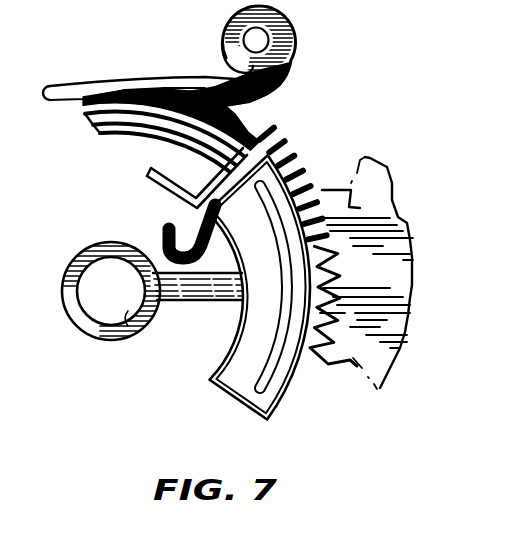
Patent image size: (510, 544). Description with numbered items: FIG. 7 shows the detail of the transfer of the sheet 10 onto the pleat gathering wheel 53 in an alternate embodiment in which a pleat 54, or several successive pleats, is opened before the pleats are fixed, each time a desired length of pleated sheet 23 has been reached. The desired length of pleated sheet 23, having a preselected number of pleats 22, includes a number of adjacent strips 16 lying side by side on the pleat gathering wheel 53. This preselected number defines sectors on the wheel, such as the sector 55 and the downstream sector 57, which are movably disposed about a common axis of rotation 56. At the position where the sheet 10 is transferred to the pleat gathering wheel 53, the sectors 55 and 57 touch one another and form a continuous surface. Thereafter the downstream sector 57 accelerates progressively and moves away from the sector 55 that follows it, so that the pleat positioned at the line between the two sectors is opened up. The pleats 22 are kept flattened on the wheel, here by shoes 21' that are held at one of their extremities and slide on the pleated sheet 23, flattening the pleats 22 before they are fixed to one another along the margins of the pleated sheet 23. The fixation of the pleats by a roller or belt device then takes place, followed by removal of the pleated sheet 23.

The sheet 10 is at (343, 351).
The adjacent strips 16 is at (320, 178).
The shoes 21' is at (261, 57).
The pleats 22 is at (295, 168).
The pleated sheet 23 is at (154, 79).
The pleat gathering wheel 53 is at (266, 292).
The pleat 54 is at (262, 157).
The sector 55 is at (216, 374).
The common axis of rotation 56 is at (132, 342).
The downstream sector 57 is at (197, 182).